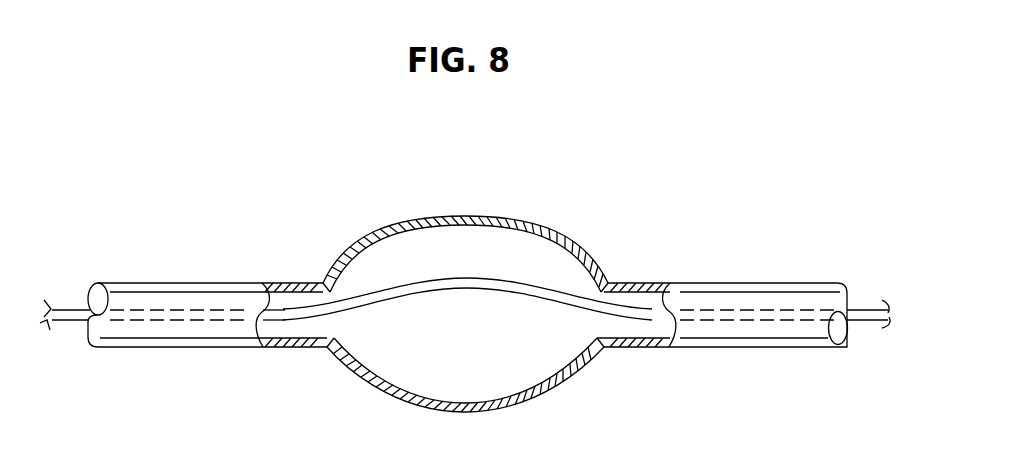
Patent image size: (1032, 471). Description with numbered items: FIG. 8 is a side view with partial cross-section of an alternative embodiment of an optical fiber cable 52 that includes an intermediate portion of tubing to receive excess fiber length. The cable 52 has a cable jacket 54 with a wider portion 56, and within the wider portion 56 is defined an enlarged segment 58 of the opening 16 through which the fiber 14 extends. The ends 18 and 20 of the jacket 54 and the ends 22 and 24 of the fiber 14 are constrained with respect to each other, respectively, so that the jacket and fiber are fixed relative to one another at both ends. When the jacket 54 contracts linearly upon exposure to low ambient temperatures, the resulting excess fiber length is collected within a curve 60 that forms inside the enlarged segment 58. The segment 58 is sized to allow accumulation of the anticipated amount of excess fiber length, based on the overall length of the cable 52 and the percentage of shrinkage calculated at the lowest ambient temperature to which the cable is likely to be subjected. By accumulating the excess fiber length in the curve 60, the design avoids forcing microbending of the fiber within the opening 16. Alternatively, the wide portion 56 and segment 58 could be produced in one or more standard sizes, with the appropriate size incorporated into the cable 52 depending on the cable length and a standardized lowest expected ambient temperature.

The fiber 14 is at (285, 317).
The opening 16 is at (855, 346).
The end of jacket 18 is at (90, 290).
The end of jacket 20 is at (843, 289).
The end of fiber 22 is at (46, 328).
The end of fiber 24 is at (890, 322).
The optical fiber cable 52 is at (292, 241).
The cable jacket 54 is at (147, 348).
The wider portion of cable jacket 56 is at (376, 392).
The enlarged segment of opening 58 is at (498, 357).
The curve 60 is at (474, 281).